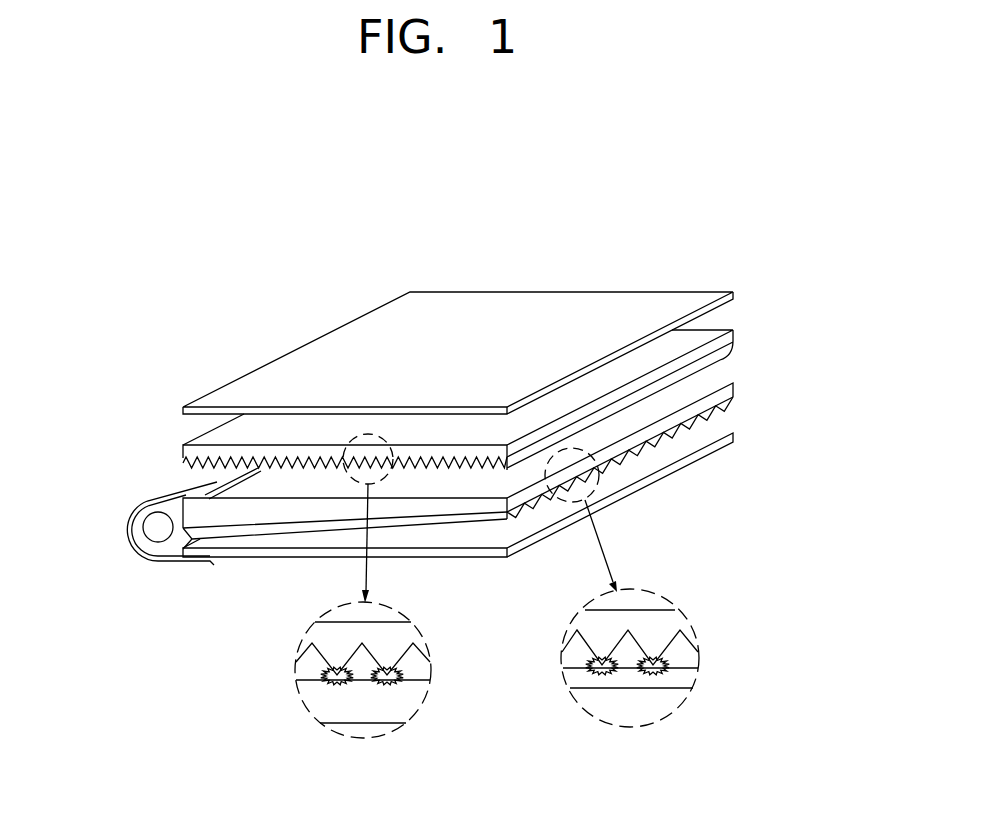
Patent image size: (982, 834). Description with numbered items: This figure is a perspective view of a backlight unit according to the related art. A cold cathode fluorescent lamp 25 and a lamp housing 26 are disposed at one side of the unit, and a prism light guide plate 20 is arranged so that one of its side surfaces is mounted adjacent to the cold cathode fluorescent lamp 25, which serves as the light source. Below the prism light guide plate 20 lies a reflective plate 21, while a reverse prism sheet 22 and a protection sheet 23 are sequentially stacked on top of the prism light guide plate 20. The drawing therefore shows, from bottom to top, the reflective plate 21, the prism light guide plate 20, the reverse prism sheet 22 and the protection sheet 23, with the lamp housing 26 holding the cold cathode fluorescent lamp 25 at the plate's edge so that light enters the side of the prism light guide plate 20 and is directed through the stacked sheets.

The prism light guide plate 20 is at (733, 390).
The reflective plate 21 is at (733, 435).
The reverse prism sheet 22 is at (733, 333).
The protection sheet 23 is at (665, 301).
The cold cathode fluorescent lamp 25 is at (157, 527).
The lamp housing 26 is at (178, 488).